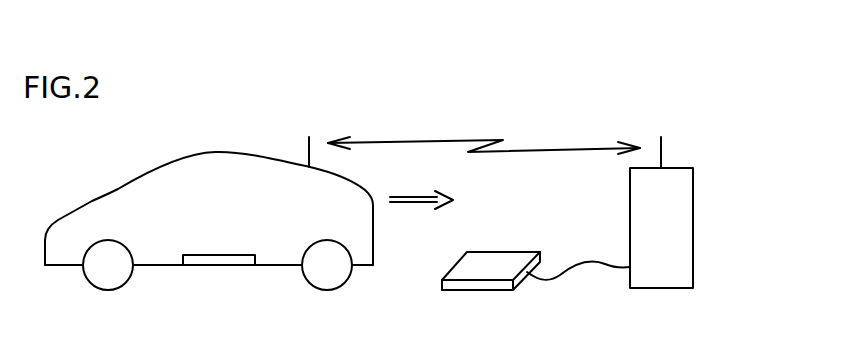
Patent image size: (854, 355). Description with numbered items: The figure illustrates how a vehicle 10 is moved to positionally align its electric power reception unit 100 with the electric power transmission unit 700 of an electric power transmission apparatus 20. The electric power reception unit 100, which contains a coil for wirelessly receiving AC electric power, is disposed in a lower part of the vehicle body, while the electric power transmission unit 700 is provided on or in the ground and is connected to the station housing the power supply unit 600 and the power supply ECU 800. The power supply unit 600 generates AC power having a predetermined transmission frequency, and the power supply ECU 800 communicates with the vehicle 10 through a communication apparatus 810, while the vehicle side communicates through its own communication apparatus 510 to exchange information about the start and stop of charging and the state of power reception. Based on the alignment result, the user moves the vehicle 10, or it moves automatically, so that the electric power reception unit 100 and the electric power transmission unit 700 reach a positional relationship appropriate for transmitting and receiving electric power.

The vehicle 10 is at (214, 150).
The communication apparatus 510 is at (306, 150).
The electric power reception unit 100 is at (220, 266).
The electric power transmission apparatus 20 is at (678, 307).
The electric power transmission unit 700 is at (493, 262).
The power supply unit 600 is at (694, 229).
The power supply ECU 800 is at (661, 228).
The communication apparatus 810 is at (662, 150).